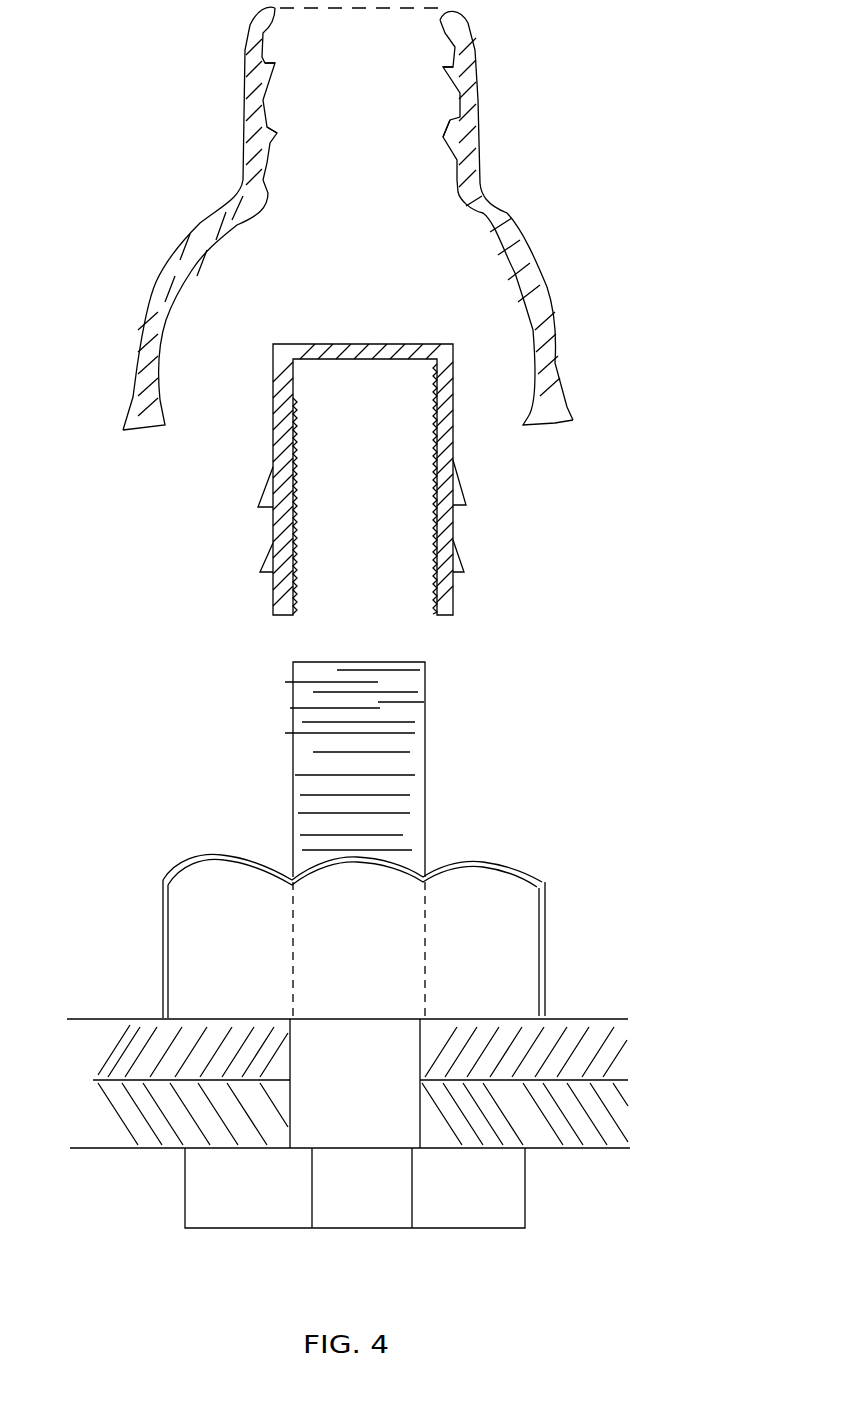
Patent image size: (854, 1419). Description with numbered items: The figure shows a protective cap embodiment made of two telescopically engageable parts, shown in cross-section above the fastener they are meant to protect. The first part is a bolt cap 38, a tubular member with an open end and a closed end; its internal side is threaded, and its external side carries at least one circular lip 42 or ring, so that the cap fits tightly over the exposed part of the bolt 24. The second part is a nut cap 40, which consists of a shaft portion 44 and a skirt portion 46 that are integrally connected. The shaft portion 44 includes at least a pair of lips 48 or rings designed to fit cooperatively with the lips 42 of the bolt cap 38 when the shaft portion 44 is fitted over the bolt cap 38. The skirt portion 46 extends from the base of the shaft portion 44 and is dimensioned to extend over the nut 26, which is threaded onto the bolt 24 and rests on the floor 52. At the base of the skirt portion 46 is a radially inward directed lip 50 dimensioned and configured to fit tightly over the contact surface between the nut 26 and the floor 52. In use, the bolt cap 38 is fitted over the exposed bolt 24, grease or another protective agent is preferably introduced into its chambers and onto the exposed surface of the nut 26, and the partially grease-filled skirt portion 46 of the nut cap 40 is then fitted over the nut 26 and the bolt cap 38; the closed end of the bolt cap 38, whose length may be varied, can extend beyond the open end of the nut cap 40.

The bolt 24 is at (413, 757).
The nut 26 is at (520, 942).
The bolt cap 38 is at (453, 447).
The nut cap 40 is at (412, 239).
The circular lip 42 is at (462, 560).
The shaft portion 44 is at (478, 80).
The skirt portion 46 is at (555, 357).
The lips 48 is at (445, 115).
The radially inward directed lip 50 is at (523, 425).
The floor 52 is at (590, 1050).